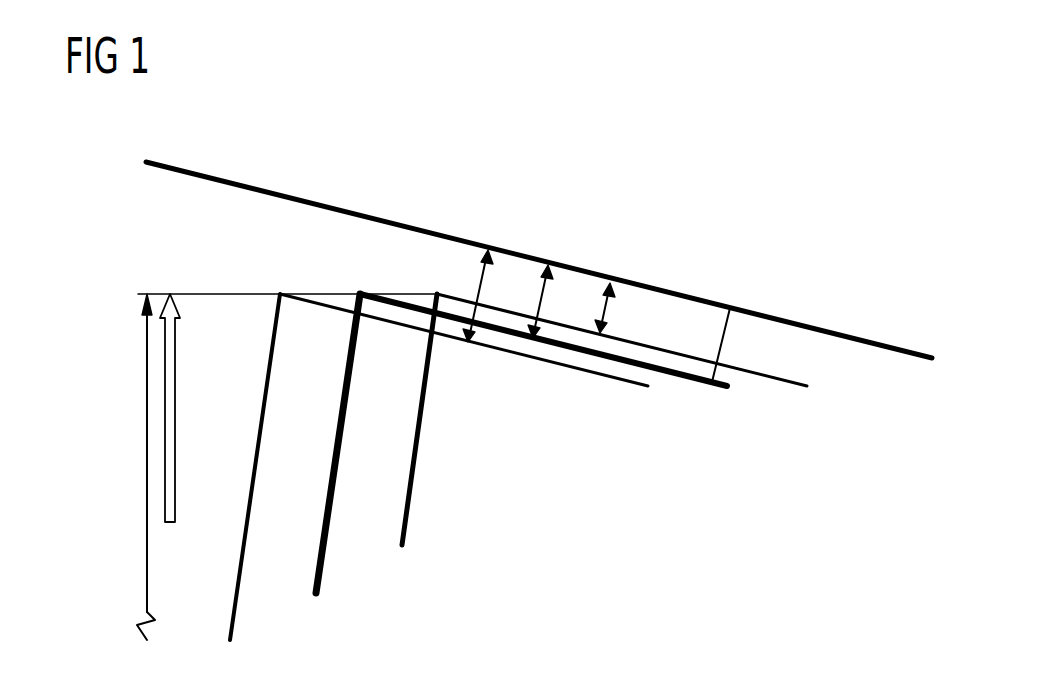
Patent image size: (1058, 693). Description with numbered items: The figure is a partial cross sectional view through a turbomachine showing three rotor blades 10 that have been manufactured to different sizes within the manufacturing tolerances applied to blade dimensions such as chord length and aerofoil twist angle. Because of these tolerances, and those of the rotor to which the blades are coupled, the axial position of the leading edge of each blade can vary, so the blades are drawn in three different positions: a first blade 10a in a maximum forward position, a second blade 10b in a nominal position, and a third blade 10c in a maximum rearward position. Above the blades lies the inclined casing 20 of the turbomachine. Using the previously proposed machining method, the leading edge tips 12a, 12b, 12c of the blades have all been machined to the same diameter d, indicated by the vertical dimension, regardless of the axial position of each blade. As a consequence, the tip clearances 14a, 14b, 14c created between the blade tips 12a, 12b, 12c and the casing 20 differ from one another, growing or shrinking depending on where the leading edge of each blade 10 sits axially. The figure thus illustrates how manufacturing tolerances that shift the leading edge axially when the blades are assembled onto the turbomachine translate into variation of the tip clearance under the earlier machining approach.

The rotor blade 10 is at (358, 485).
The first blade 10a is at (235, 597).
The second blade 10b is at (328, 547).
The third blade 10c is at (441, 461).
The leading edge tip 12a is at (280, 294).
The leading edge tip 12b is at (360, 294).
The leading edge tip 12c is at (437, 294).
The tip clearance 14a is at (484, 295).
The tip clearance 14b is at (547, 297).
The tip clearance 14c is at (604, 307).
The casing 20 is at (423, 226).
The diameter d is at (147, 450).